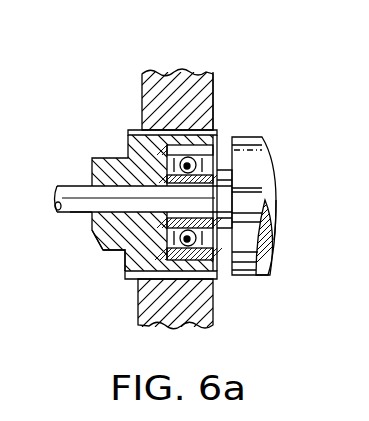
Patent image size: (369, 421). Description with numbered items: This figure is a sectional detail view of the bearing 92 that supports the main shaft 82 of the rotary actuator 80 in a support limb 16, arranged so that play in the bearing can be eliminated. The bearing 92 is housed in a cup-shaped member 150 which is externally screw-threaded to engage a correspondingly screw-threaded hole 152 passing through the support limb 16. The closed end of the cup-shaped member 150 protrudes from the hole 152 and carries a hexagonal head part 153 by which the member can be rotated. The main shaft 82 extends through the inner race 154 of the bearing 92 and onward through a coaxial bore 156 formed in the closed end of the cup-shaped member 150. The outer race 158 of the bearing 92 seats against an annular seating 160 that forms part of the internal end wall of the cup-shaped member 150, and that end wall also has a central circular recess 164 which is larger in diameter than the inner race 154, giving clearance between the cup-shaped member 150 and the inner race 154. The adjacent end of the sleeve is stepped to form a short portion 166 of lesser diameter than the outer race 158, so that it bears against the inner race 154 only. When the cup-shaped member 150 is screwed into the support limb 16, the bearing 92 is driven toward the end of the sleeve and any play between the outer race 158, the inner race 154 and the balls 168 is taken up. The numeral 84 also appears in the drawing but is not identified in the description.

The support limb 16 is at (183, 84).
The rotary actuator 80 is at (276, 138).
The main shaft 82 is at (78, 185).
The handle 84 is at (368, 148).
The bearing 92 is at (277, 252).
The cup-shaped member 150 is at (118, 164).
The screw-threaded hole 152 is at (141, 131).
The hexagonal head part 153 is at (105, 248).
The inner race 154 is at (274, 222).
The coaxial bore 156 is at (80, 215).
The outer race 158 is at (216, 157).
The annular seating 160 is at (187, 157).
The central circular recess 164 is at (124, 268).
The short portion 166 is at (222, 188).
The balls 168 is at (214, 93).